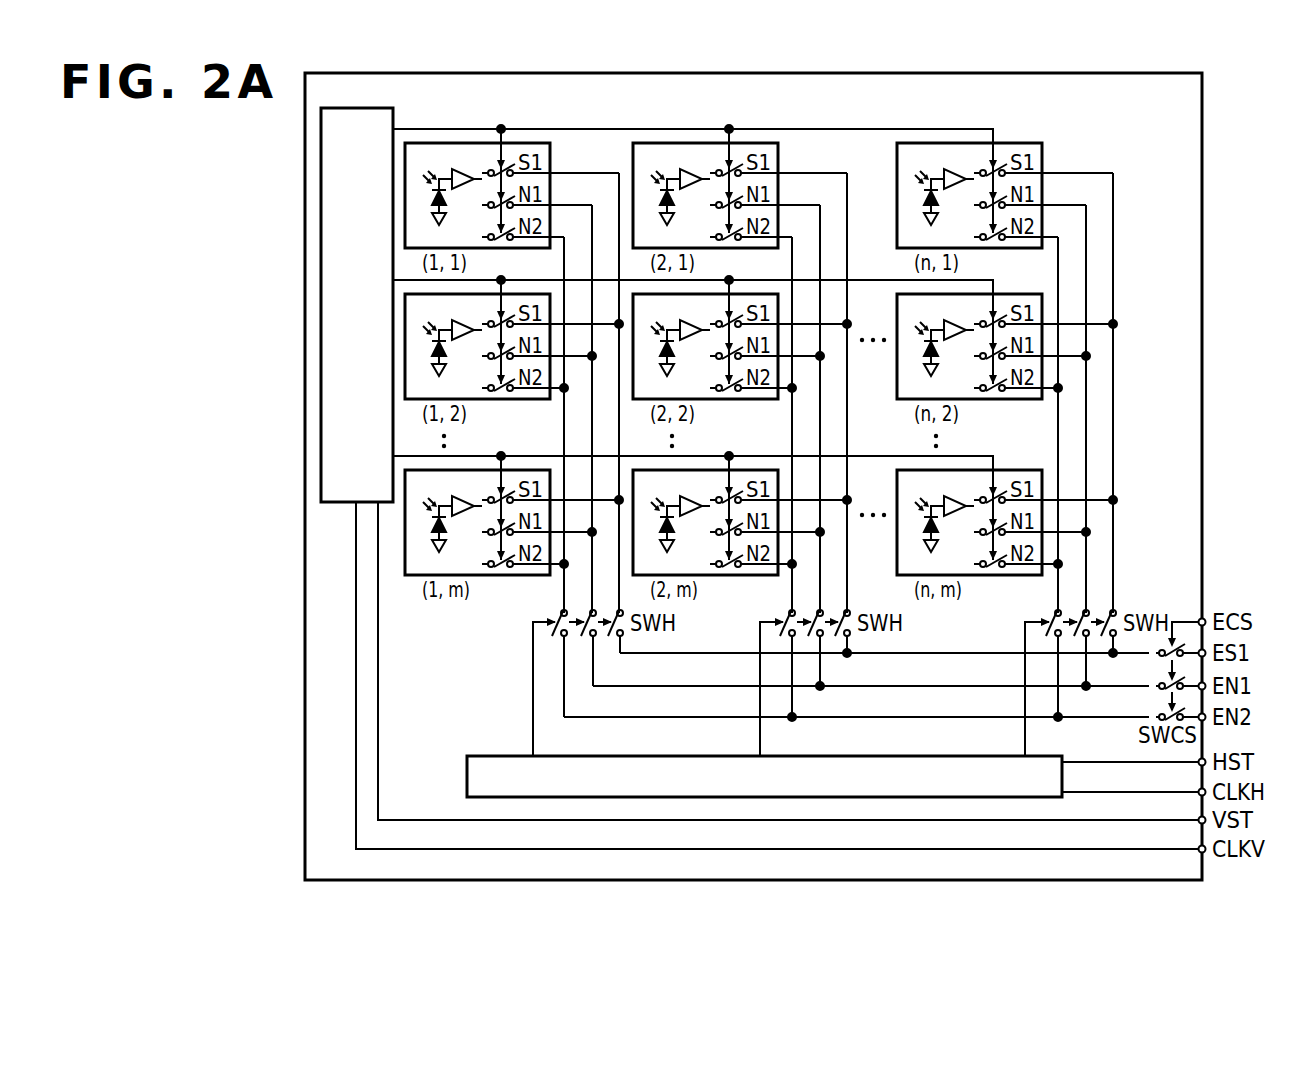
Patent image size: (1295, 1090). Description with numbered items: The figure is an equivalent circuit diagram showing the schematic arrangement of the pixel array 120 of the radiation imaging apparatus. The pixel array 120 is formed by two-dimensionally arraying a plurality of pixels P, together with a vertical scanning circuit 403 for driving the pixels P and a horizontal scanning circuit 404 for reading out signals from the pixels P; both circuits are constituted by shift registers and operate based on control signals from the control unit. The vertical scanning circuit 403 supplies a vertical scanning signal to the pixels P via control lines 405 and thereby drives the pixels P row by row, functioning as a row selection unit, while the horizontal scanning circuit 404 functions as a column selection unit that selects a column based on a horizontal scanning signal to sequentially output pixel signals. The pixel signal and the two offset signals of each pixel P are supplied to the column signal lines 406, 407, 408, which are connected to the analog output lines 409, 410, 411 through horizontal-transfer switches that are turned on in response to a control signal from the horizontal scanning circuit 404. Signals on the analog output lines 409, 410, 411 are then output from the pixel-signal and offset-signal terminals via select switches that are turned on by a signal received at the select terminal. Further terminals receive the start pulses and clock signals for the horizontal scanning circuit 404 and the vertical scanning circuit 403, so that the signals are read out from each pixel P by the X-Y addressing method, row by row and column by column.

The pixel array 120 is at (1202, 137).
The vertical scanning circuit 403 is at (343, 108).
The horizontal scanning circuit 404 is at (480, 755).
The control lines 405 is at (588, 129).
The column signal line 406 is at (1113, 388).
The column signal line 407 is at (1086, 409).
The column signal line 408 is at (1058, 443).
The analog output line 409 is at (955, 653).
The analog output line 410 is at (882, 686).
The analog output line 411 is at (612, 717).
The pixel P is at (528, 143).